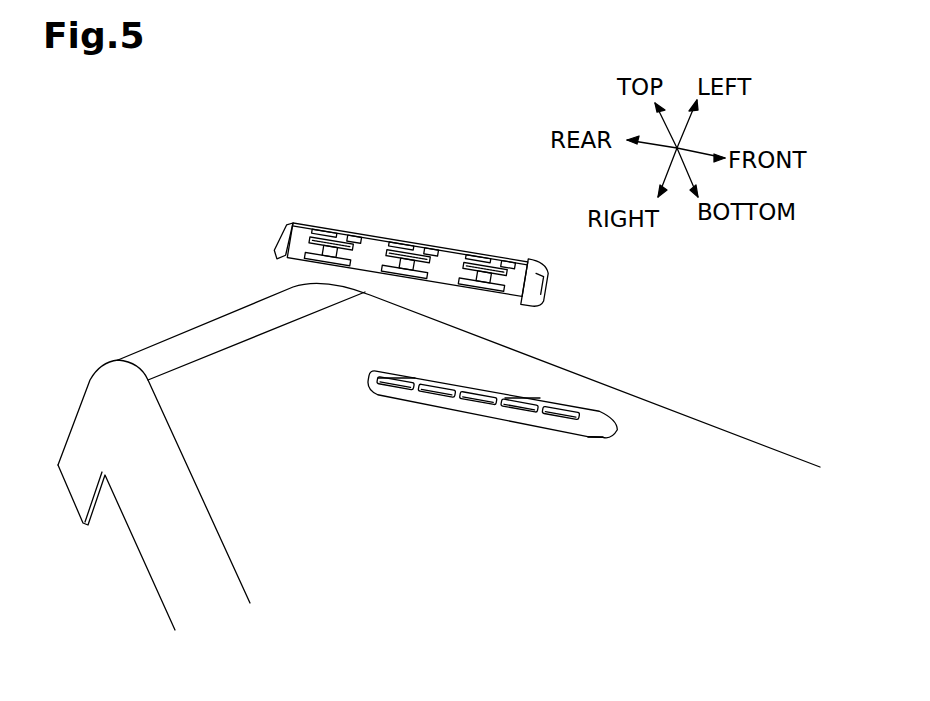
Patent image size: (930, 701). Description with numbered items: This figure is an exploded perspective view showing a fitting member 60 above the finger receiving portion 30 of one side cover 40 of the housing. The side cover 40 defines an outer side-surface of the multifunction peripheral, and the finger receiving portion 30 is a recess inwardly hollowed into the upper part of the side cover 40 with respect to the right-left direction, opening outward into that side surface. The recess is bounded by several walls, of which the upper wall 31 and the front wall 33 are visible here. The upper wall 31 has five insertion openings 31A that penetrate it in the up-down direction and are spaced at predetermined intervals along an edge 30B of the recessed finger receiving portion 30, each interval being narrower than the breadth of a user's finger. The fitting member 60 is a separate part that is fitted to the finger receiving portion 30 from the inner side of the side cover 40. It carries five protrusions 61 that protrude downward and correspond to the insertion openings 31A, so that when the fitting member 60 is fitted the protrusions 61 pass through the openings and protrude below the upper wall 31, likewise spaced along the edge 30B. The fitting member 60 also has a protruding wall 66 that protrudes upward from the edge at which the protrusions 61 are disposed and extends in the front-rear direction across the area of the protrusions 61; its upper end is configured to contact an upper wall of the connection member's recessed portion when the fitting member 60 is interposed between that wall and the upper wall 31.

The finger receiving portion 30 is at (510, 400).
The edge of the recessed finger receiving portion 30B is at (517, 400).
The upper wall 31 is at (482, 407).
The insertion openings 31A is at (463, 397).
The front wall 33 is at (590, 437).
The side cover 40 is at (655, 403).
The fitting member 60 is at (411, 239).
The protrusions 61 is at (370, 242).
The protruding wall 66 is at (418, 238).